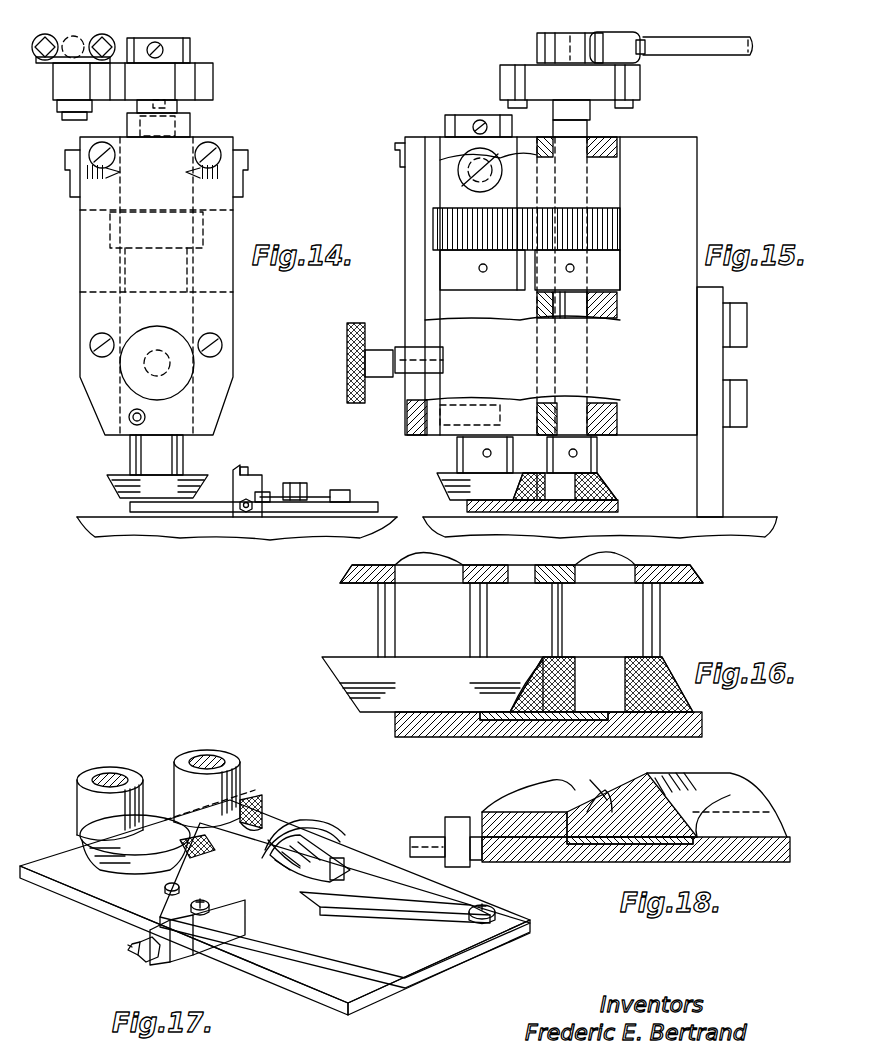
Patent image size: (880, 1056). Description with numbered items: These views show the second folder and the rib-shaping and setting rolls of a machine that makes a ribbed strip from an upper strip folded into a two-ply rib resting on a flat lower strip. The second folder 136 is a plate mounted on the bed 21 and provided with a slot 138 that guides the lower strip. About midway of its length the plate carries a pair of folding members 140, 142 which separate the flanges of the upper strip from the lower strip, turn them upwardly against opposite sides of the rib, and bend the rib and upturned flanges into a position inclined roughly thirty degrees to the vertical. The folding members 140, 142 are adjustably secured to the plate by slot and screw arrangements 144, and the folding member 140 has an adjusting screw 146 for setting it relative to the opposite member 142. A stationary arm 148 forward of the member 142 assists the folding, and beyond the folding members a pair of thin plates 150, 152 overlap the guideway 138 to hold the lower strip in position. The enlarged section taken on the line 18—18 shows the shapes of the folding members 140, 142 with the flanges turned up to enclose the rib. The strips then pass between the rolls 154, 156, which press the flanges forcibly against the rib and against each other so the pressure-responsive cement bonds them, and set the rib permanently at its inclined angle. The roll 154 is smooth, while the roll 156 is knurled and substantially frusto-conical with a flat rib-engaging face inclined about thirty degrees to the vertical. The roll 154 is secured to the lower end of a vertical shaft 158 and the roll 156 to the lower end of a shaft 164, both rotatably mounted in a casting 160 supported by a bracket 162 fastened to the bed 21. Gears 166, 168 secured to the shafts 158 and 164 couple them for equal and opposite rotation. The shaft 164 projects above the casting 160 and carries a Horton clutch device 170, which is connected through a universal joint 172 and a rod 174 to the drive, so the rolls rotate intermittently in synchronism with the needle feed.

In FIG. 14, the bed 21 is at (188, 520).
In FIG. 15, the bed 21 is at (745, 522).
In FIG. 17, the section line 18 is at (185, 980).
In FIG. 14, the second folder 136 is at (335, 512).
In FIG. 15, the second folder 136 is at (620, 508).
In FIG. 16, the second folder 136 is at (700, 725).
In FIG. 18, the second folder 136 is at (725, 862).
In FIG. 17, the second folder 136 is at (335, 995).
In FIG. 16, the slot 138 is at (492, 725).
In FIG. 18, the slot 138 is at (750, 858).
In FIG. 17, the slot 138 is at (440, 962).
In FIG. 14, the folding member 140 is at (237, 468).
In FIG. 18, the folding member 140 is at (548, 785).
In FIG. 17, the folding member 140 is at (255, 920).
In FIG. 18, the folding member 142 is at (730, 797).
In FIG. 17, the folding member 142 is at (305, 888).
In FIG. 17, the slot and screw arrangements 144 is at (205, 918).
In FIG. 14, the adjusting screw 146 is at (244, 514).
In FIG. 18, the adjusting screw 146 is at (475, 862).
In FIG. 17, the adjusting screw 146 is at (138, 958).
In FIG. 14, the stationary arm 148 is at (298, 482).
In FIG. 17, the stationary arm 148 is at (387, 910).
In FIG. 17, the thin plate 150 is at (163, 890).
In FIG. 17, the thin plate 152 is at (280, 830).
In FIG. 14, the rib-shaping and setting roll 154 is at (112, 486).
In FIG. 15, the rib-shaping and setting roll 154 is at (450, 485).
In FIG. 16, the rib-shaping and setting roll 154 is at (340, 655).
In FIG. 17, the rib-shaping and setting roll 154 is at (90, 830).
In FIG. 15, the rib-shaping and setting roll 156 is at (605, 485).
In FIG. 16, the rib-shaping and setting roll 156 is at (660, 660).
In FIG. 17, the rib-shaping and setting roll 156 is at (245, 815).
In FIG. 14, the vertical shaft 158 is at (178, 112).
In FIG. 15, the vertical shaft 158 is at (468, 114).
In FIG. 16, the vertical shaft 158 is at (413, 570).
In FIG. 17, the vertical shaft 158 is at (115, 778).
In FIG. 14, the casting 160 is at (82, 263).
In FIG. 15, the casting 160 is at (690, 165).
In FIG. 15, the bracket 162 is at (712, 478).
In FIG. 14, the shaft 164 is at (168, 40).
In FIG. 15, the shaft 164 is at (590, 312).
In FIG. 16, the shaft 164 is at (618, 572).
In FIG. 17, the shaft 164 is at (215, 740).
In FIG. 14, the gear 166 is at (110, 226).
In FIG. 15, the gear 166 is at (460, 225).
In FIG. 15, the gear 168 is at (608, 225).
In FIG. 14, the Horton clutch device 170 is at (195, 80).
In FIG. 15, the Horton clutch device 170 is at (535, 78).
In FIG. 14, the universal joint 172 is at (62, 36).
In FIG. 15, the universal joint 172 is at (615, 37).
In FIG. 14, the rod 174 is at (88, 37).
In FIG. 15, the rod 174 is at (730, 38).